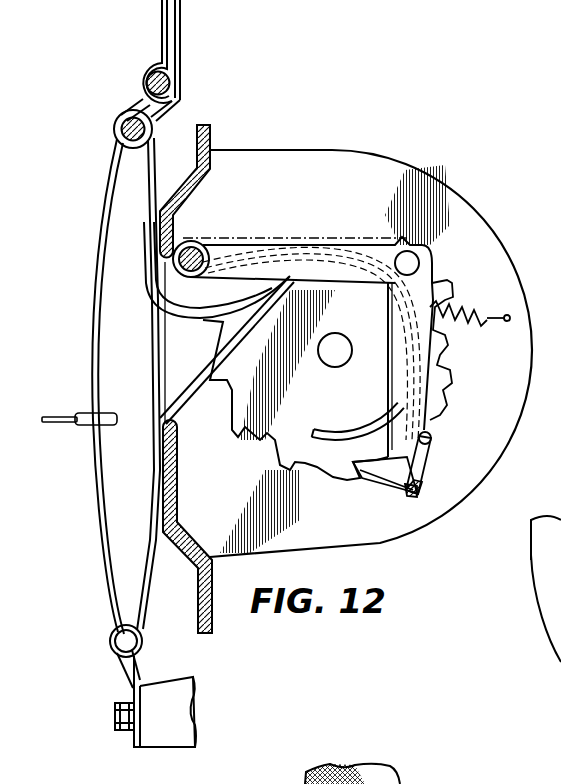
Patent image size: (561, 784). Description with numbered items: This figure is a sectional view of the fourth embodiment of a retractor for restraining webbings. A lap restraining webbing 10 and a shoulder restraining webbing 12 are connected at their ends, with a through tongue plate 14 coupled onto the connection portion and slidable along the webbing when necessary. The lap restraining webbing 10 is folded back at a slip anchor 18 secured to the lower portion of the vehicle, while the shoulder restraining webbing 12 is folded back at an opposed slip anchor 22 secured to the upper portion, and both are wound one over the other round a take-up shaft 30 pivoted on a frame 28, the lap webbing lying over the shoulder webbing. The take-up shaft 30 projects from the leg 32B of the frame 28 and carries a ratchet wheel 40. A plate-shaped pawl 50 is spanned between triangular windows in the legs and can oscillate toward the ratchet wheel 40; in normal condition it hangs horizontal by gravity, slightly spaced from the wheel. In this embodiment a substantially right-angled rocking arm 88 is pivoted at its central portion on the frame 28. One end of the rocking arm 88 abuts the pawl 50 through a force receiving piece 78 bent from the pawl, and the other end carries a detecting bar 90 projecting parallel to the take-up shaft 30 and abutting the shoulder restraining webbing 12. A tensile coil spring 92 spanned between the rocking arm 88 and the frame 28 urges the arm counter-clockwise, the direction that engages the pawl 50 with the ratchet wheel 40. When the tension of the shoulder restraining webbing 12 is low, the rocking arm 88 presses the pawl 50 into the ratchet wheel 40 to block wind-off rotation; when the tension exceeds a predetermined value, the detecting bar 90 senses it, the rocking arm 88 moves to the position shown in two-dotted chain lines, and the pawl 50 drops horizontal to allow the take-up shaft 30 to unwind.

The lap restraining webbing 10 is at (153, 577).
The shoulder restraining webbing 12 is at (156, 284).
The through tongue plate 14 is at (63, 416).
The slip anchor 18 is at (120, 670).
The slip anchor 22 is at (133, 101).
The frame 28 is at (181, 186).
The take-up shaft 30 is at (347, 365).
The leg 32B is at (442, 181).
The ratchet wheel 40 is at (265, 457).
The pawl 50 is at (363, 492).
The force receiving piece 78 is at (434, 452).
The rocking arm 88 is at (257, 242).
The detecting bar 90 is at (197, 250).
The tensile coil spring 92 is at (486, 324).